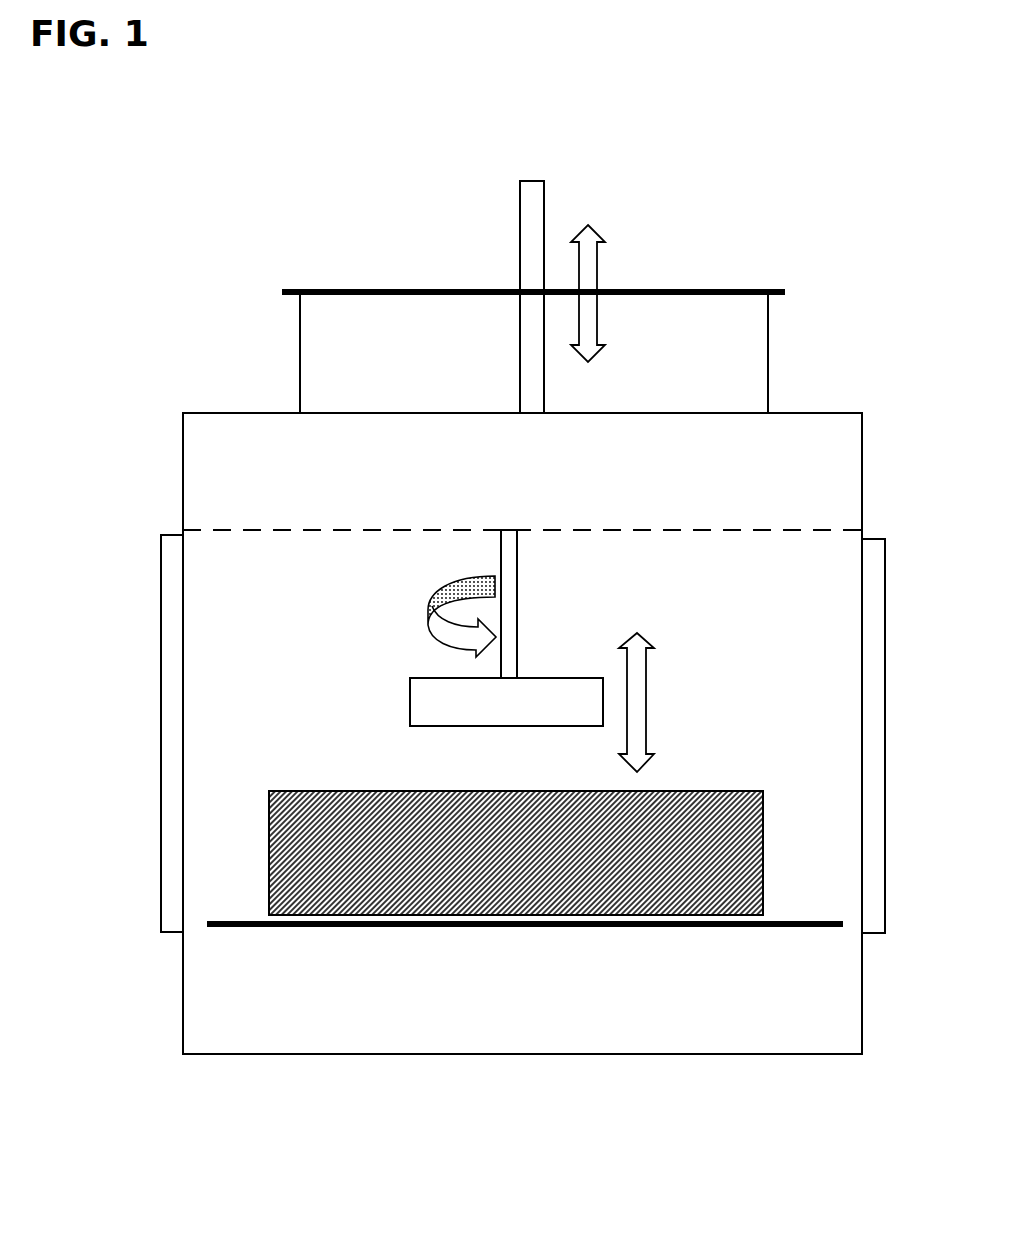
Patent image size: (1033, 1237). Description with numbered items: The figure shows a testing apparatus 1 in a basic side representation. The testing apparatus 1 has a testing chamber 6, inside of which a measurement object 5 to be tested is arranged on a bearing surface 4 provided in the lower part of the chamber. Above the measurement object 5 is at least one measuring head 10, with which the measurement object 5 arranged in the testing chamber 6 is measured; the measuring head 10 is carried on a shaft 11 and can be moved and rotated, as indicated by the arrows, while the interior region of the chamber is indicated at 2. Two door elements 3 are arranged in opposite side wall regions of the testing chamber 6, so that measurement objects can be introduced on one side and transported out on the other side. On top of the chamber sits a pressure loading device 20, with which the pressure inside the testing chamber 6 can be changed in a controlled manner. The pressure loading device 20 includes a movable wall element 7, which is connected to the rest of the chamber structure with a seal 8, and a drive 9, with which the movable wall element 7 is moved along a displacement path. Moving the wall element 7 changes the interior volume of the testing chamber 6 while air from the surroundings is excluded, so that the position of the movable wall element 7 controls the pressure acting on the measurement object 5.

The testing apparatus 1 is at (148, 375).
The process chamber 2 is at (793, 548).
The door elements 3 is at (168, 618).
The bearing surface 4 is at (249, 921).
The measurement object 5 is at (557, 878).
The testing chamber 6 is at (826, 411).
The movable wall element 7 is at (655, 290).
The seal 8 is at (770, 358).
The drive 9 is at (520, 230).
The measuring head 10 is at (555, 697).
The rotary shaft 11 is at (517, 592).
The pressure loading device 20 is at (757, 270).